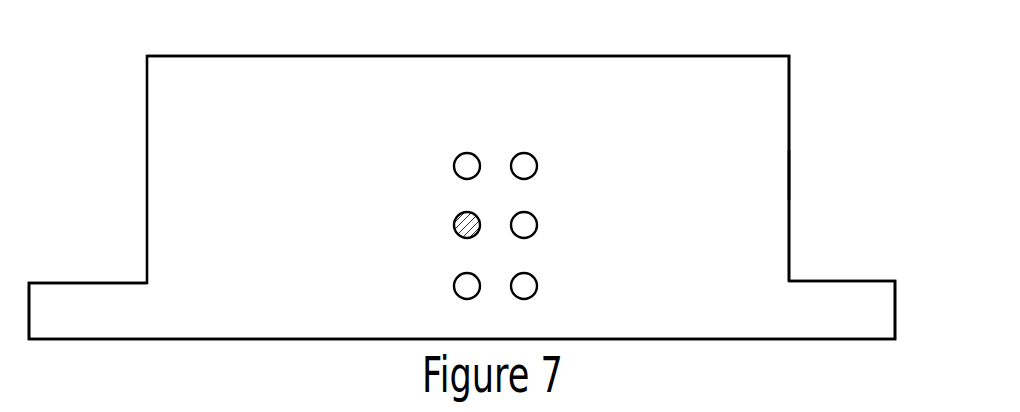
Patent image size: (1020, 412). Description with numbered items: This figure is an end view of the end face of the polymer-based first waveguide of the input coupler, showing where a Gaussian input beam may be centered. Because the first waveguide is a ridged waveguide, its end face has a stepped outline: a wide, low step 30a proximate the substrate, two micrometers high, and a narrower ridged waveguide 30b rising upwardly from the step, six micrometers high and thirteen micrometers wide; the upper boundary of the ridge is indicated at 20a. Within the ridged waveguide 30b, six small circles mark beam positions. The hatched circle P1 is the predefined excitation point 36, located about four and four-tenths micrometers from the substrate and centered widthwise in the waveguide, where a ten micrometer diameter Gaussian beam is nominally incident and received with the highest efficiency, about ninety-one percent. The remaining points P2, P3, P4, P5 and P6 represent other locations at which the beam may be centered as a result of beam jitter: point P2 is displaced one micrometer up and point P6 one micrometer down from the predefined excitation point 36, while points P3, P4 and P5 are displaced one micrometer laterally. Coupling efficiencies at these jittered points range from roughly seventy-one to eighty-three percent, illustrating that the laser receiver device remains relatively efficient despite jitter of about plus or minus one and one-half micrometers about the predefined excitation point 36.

The first wall portion 20a is at (763, 120).
The ridged waveguide 30b is at (770, 192).
The step 30a is at (873, 305).
The predefined excitation point 36 is at (462, 239).
The predefined excitation point P1 is at (426, 241).
The point P2 is at (452, 166).
The point P3 is at (543, 166).
The point P4 is at (543, 225).
The point P5 is at (543, 286).
The point P6 is at (452, 286).